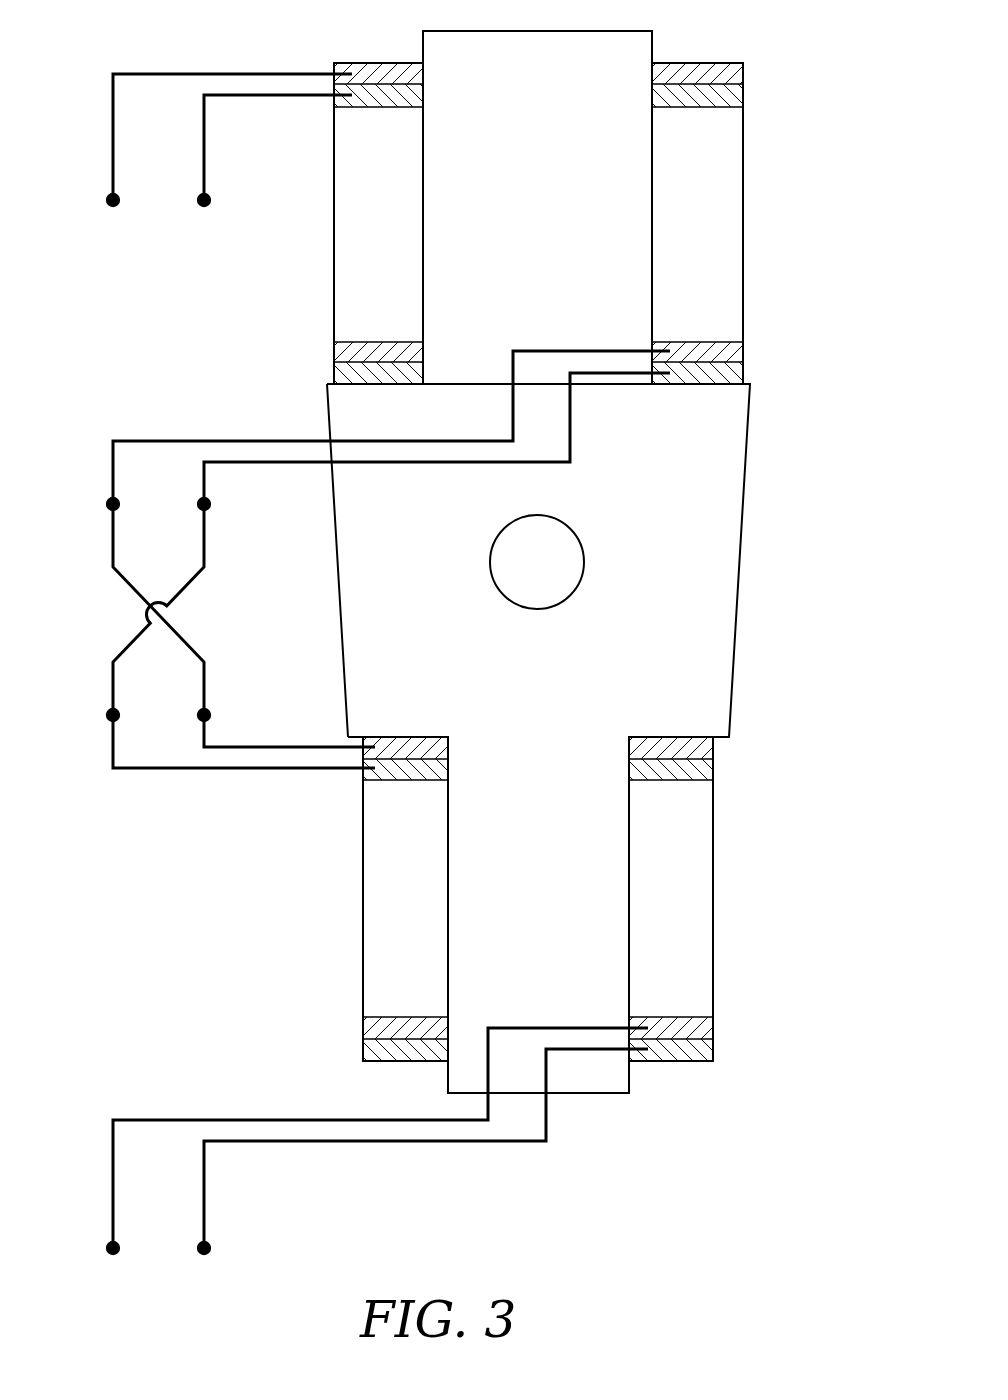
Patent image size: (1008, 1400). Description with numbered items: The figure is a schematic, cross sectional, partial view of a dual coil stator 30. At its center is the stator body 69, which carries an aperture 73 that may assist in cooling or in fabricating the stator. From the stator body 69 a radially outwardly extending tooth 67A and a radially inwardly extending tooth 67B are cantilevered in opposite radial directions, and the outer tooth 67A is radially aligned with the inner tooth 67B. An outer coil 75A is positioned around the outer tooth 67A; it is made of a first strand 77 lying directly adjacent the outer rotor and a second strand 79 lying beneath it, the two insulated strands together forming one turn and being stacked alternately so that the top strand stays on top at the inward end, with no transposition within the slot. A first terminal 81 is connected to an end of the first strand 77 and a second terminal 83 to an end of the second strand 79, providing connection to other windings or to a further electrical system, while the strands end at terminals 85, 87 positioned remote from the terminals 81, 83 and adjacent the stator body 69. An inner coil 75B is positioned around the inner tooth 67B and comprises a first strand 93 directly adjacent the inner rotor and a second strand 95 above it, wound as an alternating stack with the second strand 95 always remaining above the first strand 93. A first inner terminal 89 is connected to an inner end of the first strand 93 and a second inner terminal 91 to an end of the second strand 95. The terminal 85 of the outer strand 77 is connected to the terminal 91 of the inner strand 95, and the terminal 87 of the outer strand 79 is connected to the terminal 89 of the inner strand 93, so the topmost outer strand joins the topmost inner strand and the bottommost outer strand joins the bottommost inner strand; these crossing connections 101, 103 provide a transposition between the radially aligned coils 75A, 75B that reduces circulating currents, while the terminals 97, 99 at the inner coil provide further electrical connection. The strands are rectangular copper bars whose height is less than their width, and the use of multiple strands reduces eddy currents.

The stator 30 is at (785, 388).
The radially outwardly extending tooth 67A is at (637, 252).
The radially inwardly extending tooth 67B is at (605, 908).
The stator body 69 is at (700, 493).
The aperture 73 is at (583, 590).
The outer coil 75A is at (767, 167).
The inner coil 75B is at (735, 881).
The first strand 77 is at (700, 341).
The second strand 79 is at (697, 405).
The first terminal 81 is at (106, 201).
The second terminal 83 is at (211, 200).
The terminal 85 is at (106, 504).
The terminal 87 is at (211, 504).
The first inner terminal 89 is at (106, 714).
The second inner terminal 91 is at (211, 715).
The first strand 93 is at (668, 1082).
The second strand 95 is at (670, 1015).
The terminal 97 is at (211, 1248).
The terminal 99 is at (106, 1248).
The cross connection wire 101 is at (127, 645).
The cross connection wire 103 is at (122, 585).